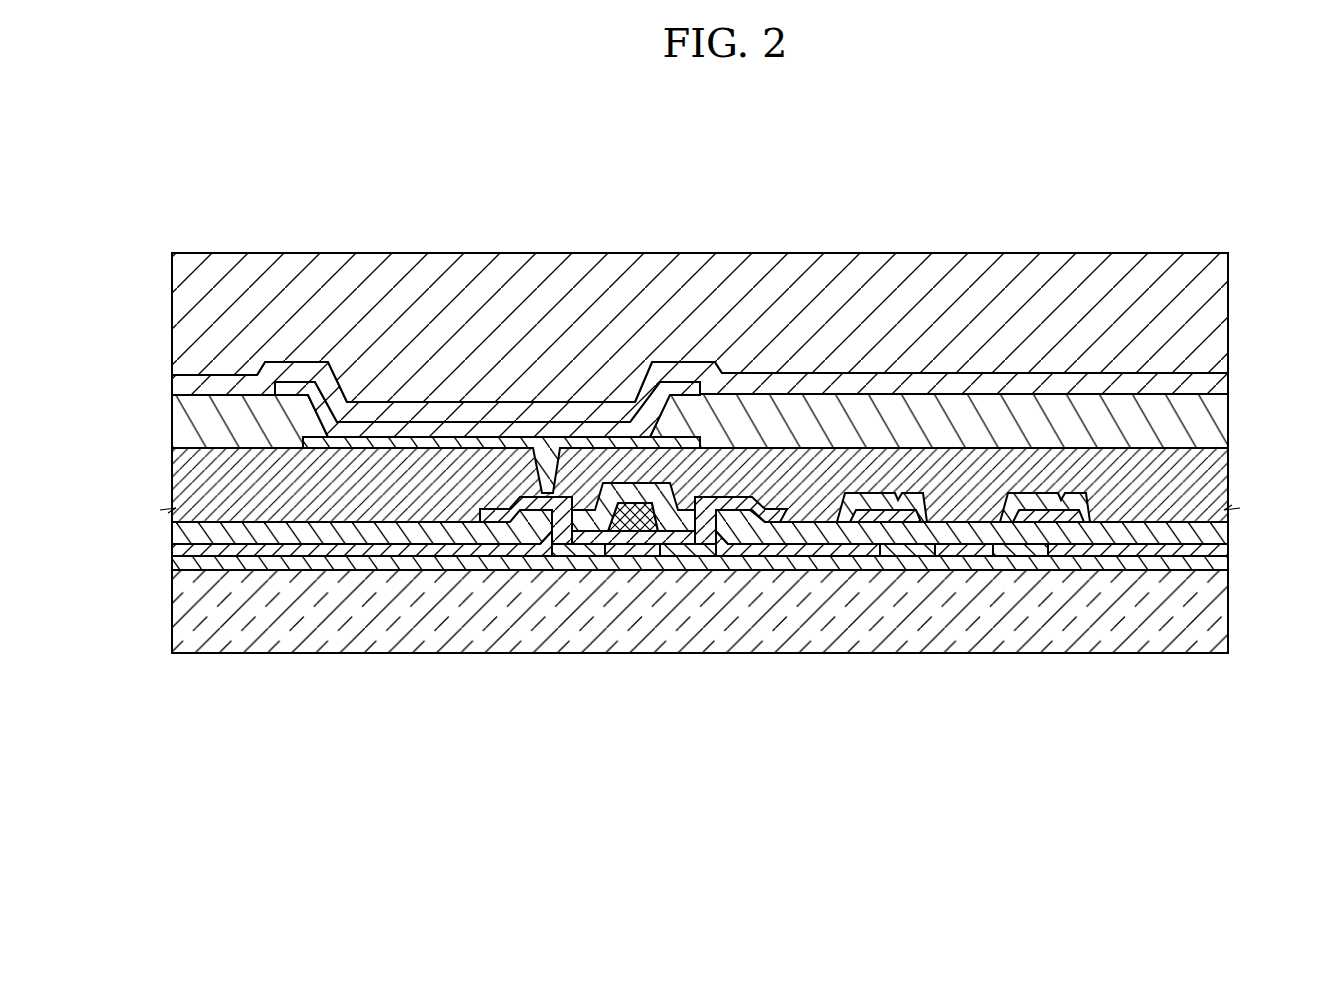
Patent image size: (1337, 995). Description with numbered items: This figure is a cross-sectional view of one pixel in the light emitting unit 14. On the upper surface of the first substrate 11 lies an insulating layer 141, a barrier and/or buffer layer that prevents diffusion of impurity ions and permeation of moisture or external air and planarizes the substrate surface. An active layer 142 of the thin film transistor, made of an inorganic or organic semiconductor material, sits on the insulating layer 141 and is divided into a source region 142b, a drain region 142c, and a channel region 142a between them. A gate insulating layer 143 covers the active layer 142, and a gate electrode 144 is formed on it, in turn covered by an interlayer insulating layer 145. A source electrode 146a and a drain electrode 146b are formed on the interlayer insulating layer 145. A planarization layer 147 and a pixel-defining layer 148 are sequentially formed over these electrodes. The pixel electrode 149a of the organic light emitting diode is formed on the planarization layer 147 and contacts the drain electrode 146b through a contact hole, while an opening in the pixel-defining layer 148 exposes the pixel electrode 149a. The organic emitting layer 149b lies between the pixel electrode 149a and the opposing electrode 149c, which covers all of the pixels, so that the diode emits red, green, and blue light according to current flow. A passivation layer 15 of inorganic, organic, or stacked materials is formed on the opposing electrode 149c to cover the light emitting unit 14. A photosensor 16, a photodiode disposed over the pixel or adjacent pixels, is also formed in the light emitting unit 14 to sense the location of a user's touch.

The first substrate 11 is at (1215, 612).
The light emitting unit 14 is at (783, 233).
The passivation layer 15 is at (1215, 318).
The photosensor 16 is at (971, 526).
The insulating layer 141 is at (1215, 565).
The active layer 142 is at (712, 727).
The channel region 142a is at (636, 557).
The source region 142b is at (696, 557).
The drain region 142c is at (578, 557).
The gate insulating layer 143 is at (1215, 550).
The gate electrode 144 is at (637, 502).
The interlayer insulating layer 145 is at (1215, 530).
The source electrode 146a is at (703, 496).
The drain electrode 146b is at (587, 492).
The planarization layer 147 is at (1215, 488).
The pixel-defining layer 148 is at (1215, 425).
The pixel electrode 149a is at (385, 445).
The organic emitting layer 149b is at (448, 422).
The opposing electrode 149c is at (507, 404).